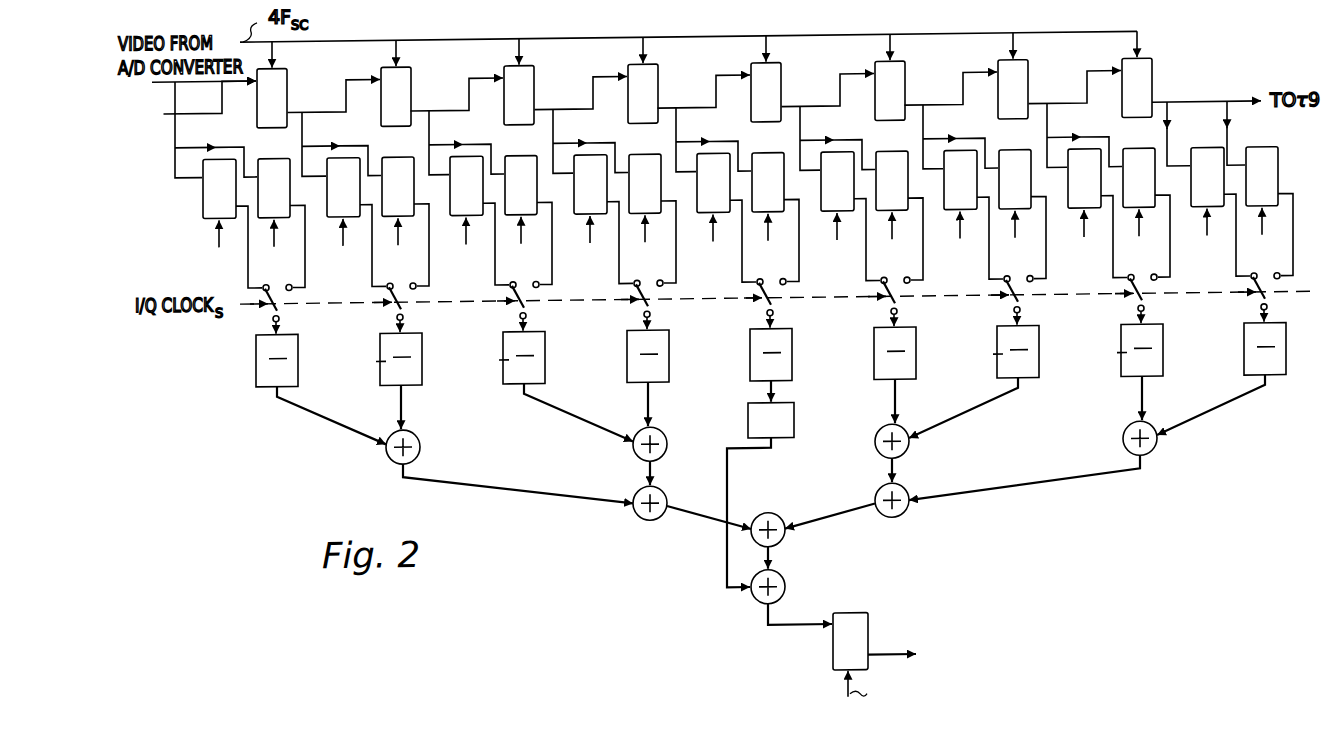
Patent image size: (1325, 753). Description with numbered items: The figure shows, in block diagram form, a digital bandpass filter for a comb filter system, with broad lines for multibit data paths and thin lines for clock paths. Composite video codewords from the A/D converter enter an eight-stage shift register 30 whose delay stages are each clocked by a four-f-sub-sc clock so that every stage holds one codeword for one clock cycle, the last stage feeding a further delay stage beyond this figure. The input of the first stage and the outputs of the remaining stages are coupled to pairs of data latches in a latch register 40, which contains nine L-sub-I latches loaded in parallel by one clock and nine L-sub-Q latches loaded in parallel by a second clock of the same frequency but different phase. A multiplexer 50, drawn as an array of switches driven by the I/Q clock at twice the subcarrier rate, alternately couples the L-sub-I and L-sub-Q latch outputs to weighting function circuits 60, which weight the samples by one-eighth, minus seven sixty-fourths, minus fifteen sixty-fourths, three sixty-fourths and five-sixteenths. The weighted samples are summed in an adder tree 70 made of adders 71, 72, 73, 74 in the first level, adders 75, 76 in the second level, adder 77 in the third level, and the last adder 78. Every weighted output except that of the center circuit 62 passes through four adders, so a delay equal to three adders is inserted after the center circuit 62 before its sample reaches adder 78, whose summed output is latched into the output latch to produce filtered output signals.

The shift register 30 is at (710, 100).
The latch register 40 is at (706, 214).
The multiplexer 50 is at (719, 294).
The weighting function circuits 60 is at (727, 376).
The center weighting function circuit 62 is at (793, 365).
The adder tree 70 is at (799, 507).
The adder 71 is at (420, 451).
The adder 72 is at (667, 451).
The adder 73 is at (909, 456).
The adder 74 is at (1123, 450).
The adder 75 is at (667, 510).
The adder 76 is at (907, 523).
The adder 77 is at (783, 551).
The last adder 78 is at (785, 596).